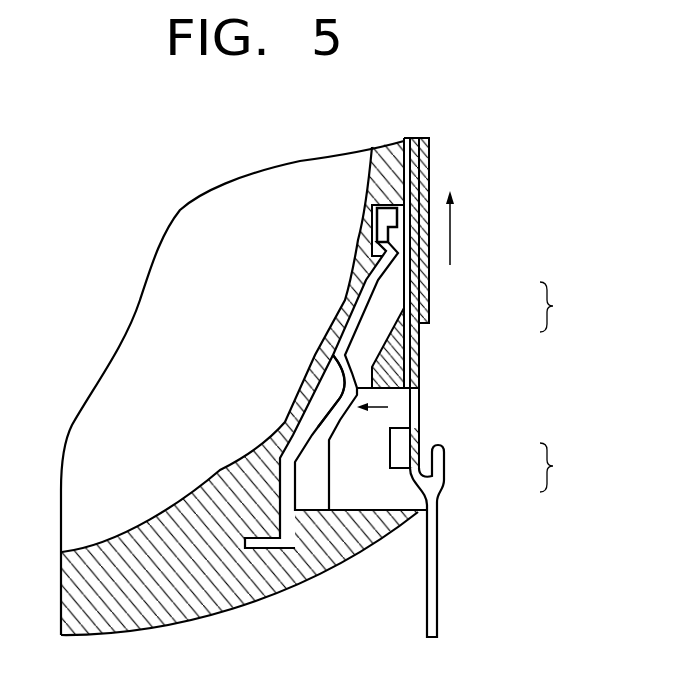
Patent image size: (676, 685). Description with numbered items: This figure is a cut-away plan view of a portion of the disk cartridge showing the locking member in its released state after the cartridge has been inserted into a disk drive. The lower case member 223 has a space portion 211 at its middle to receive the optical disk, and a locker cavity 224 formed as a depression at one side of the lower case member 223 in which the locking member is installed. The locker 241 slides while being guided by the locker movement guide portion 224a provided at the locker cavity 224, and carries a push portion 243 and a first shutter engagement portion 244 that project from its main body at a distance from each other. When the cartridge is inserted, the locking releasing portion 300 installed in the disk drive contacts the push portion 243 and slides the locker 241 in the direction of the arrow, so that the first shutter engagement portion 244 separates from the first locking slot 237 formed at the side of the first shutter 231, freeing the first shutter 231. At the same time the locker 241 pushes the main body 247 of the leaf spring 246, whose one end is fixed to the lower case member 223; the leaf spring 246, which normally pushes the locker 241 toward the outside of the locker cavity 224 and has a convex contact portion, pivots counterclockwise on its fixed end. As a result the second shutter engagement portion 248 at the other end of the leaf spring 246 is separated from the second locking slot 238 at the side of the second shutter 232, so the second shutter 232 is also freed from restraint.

The space portion 211 is at (162, 282).
The lower case member 223 is at (217, 602).
The locker cavity 224 is at (315, 495).
The locker movement guide portion 224a is at (350, 320).
The first shutter 231 is at (415, 352).
The second shutter 232 is at (431, 165).
The first locking slot 237 is at (420, 396).
The second locking slot 238 is at (432, 238).
The locker 241 is at (570, 467).
The push portion 243 is at (400, 489).
The first shutter engagement portion 244 is at (420, 430).
The leaf spring 246 is at (570, 307).
The main body of the leaf spring 247 is at (405, 333).
The second shutter engagement portion 248 is at (397, 223).
The locking releasing portion 300 is at (440, 608).